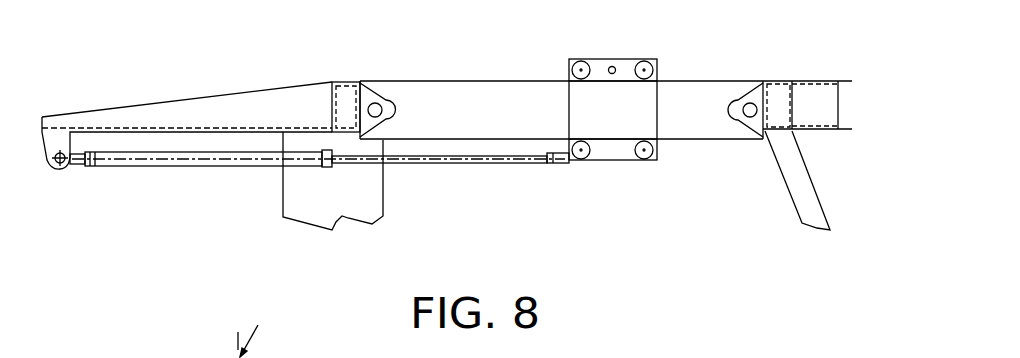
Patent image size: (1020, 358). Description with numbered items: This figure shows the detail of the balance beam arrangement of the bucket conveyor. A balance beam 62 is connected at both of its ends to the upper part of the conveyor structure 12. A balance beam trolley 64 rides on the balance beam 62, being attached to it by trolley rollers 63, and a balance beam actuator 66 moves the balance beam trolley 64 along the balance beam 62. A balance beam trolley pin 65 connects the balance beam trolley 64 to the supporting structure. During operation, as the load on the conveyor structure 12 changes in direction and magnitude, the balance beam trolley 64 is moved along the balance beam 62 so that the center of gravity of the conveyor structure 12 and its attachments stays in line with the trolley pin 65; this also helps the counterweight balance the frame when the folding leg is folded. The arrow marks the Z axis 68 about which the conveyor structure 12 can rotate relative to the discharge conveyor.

The conveyor structure 12 is at (215, 95).
The balance beam 62 is at (432, 80).
The trolley rollers 63 is at (657, 152).
The balance beam trolley 64 is at (658, 83).
The balance beam trolley pin 65 is at (613, 65).
The hydraulic cylinder 66 is at (230, 165).
The Z axis 68 is at (258, 325).